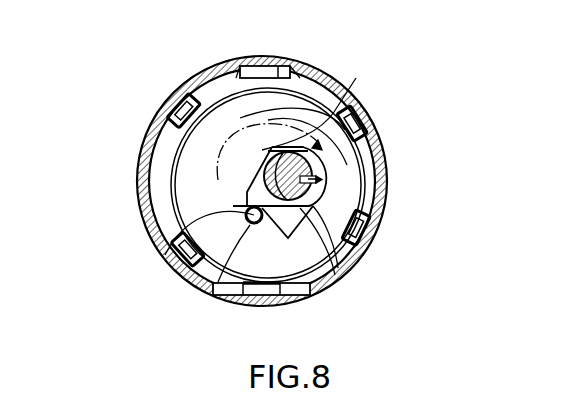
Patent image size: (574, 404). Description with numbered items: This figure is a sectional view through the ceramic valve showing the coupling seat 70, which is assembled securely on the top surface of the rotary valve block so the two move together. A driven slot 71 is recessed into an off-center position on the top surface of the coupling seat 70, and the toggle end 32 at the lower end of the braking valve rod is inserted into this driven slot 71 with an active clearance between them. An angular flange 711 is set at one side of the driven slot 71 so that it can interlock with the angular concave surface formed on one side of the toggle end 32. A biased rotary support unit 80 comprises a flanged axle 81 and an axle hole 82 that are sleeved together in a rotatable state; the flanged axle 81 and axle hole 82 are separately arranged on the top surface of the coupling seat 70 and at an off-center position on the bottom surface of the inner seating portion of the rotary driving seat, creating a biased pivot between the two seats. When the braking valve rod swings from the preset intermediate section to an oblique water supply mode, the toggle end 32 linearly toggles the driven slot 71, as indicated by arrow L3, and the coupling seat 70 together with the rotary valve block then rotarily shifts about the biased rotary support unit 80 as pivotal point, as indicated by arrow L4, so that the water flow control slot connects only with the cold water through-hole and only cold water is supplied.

The coupling seat 70 is at (160, 162).
The driven slot 71 is at (362, 100).
The angular flange 711 is at (348, 258).
The toggle end 32 is at (372, 150).
The biased rotary support unit 80 is at (201, 205).
The flanged axle 81 is at (197, 283).
The axle hole 82 is at (180, 244).
The arrow L3 is at (360, 202).
The arrow L4 is at (271, 168).